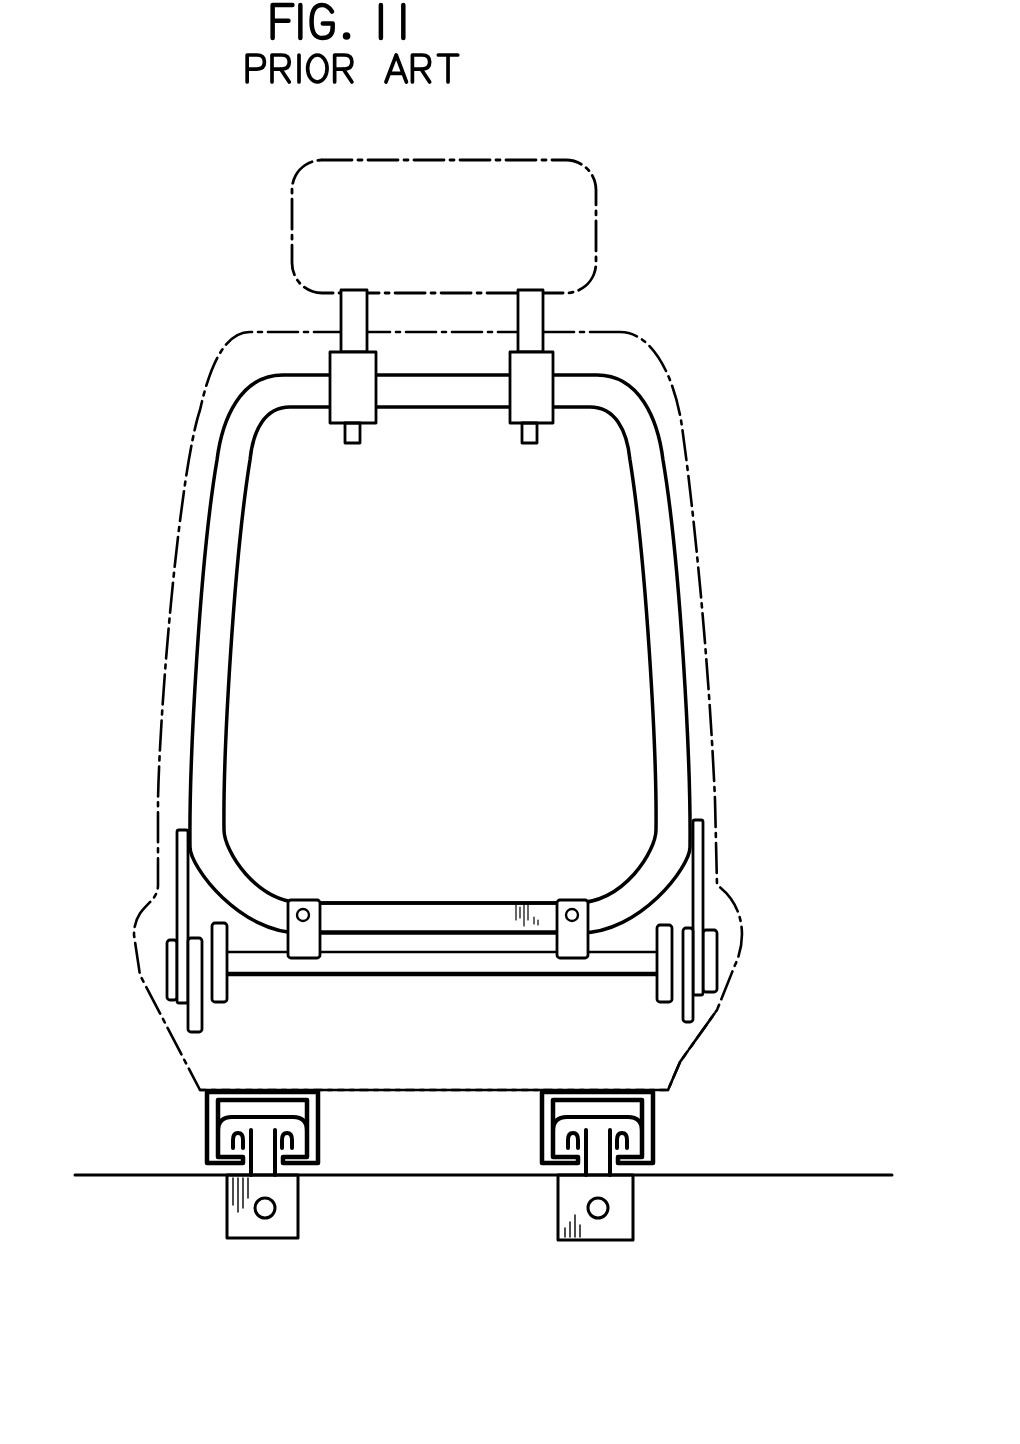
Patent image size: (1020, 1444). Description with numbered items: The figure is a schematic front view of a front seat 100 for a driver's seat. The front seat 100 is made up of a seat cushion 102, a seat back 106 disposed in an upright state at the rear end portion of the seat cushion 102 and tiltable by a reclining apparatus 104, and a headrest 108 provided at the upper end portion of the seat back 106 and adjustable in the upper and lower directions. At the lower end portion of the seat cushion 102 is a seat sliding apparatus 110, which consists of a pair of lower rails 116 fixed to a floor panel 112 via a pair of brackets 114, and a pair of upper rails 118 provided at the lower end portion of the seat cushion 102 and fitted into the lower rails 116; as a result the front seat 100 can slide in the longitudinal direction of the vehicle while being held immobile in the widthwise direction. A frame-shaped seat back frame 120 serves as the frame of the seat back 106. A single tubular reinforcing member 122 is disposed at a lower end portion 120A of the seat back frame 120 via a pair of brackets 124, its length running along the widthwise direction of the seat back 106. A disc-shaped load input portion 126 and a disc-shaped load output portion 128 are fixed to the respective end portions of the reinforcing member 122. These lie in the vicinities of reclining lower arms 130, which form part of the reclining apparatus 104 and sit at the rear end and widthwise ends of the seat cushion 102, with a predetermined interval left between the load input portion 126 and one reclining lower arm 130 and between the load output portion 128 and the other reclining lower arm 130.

The front seat 100 is at (751, 249).
The seat cushion 102 is at (743, 1050).
The reclining apparatus 104 is at (533, 957).
The seat back 106 is at (476, 711).
The headrest 108 is at (452, 195).
The seat sliding apparatus 110 is at (160, 1198).
The floor panel 112 is at (489, 1142).
The brackets 114 is at (452, 1228).
The lower rails 116 is at (430, 1181).
The upper rails 118 is at (428, 1127).
The seat back frame 120 is at (519, 654).
The lower end portion of seat back frame 120A is at (438, 878).
The reinforcing member 122 is at (442, 998).
The brackets 124 is at (448, 972).
The load input portion 126 is at (270, 915).
The load output portion 128 is at (614, 904).
The reclining lower arms 130 is at (455, 934).